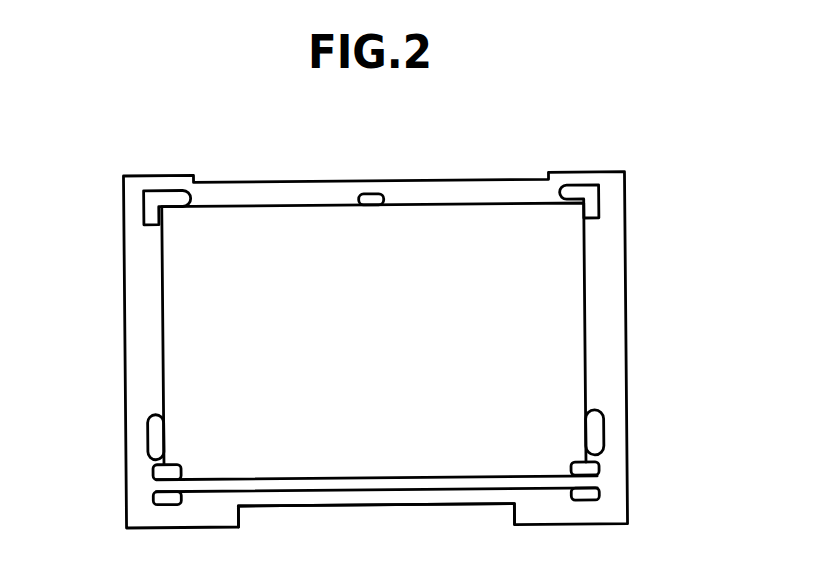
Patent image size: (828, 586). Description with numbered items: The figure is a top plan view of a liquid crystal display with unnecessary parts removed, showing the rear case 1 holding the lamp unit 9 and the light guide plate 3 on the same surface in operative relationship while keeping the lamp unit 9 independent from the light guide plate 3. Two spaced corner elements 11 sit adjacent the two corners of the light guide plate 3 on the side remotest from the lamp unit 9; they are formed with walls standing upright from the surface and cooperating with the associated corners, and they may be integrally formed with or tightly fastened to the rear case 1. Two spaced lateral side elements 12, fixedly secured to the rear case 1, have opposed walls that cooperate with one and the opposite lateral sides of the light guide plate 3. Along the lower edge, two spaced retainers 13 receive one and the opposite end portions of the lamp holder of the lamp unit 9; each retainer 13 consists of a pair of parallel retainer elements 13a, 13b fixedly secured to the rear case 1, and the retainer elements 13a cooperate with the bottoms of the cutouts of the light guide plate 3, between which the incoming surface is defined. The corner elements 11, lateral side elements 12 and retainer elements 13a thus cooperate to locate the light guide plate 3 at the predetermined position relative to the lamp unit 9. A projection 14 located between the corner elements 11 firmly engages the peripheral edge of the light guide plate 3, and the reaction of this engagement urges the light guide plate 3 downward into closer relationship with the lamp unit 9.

The rear case 1 is at (138, 248).
The light guide plate 3 is at (203, 298).
The lamp unit 9 is at (396, 502).
The corner elements 11 is at (166, 197).
The lateral side elements 12 is at (152, 440).
The retainers 13 is at (380, 491).
The retainer element 13a is at (155, 470).
The retainer element 13b is at (152, 497).
The projection 14 is at (373, 197).